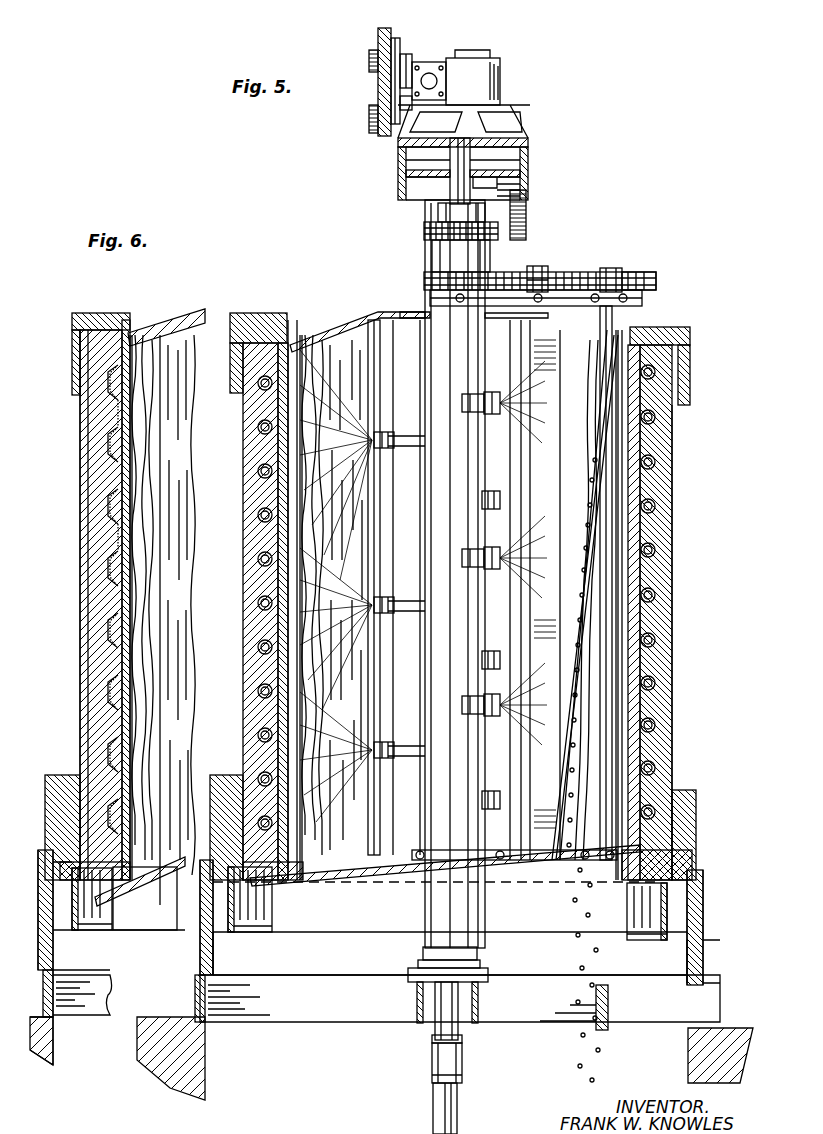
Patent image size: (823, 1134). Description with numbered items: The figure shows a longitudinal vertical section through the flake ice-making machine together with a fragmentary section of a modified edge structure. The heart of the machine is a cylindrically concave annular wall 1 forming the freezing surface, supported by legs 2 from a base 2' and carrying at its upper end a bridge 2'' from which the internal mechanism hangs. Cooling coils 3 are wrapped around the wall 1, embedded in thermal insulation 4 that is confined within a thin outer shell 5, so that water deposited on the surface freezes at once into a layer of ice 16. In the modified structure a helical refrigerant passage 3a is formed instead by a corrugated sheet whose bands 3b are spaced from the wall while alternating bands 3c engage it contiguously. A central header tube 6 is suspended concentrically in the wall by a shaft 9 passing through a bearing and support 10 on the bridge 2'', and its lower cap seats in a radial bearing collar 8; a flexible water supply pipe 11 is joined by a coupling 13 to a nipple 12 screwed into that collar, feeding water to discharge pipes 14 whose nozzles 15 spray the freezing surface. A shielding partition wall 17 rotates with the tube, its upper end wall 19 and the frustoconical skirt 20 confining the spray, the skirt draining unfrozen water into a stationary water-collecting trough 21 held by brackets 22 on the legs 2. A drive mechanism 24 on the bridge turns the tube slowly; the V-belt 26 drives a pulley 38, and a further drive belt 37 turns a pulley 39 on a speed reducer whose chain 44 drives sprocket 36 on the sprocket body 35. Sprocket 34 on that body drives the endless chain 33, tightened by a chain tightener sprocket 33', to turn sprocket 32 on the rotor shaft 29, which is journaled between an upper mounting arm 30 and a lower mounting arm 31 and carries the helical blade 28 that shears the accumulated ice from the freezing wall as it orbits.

In FIG. 5, the V-belt 26 is at (392, 50).
In FIG. 5, the further drive belt 37 is at (446, 60).
In FIG. 5, the pulley 38 is at (375, 46).
In FIG. 5, the pulley 39 is at (378, 124).
In FIG. 5, the drive mechanism 24 is at (500, 78).
In FIG. 5, the bearing and support 10 is at (415, 176).
In FIG. 5, the shaft 9 is at (450, 194).
In FIG. 5, the bridge 2'' is at (541, 212).
In FIG. 6, the sprocket body 35 is at (438, 210).
In FIG. 6, the chain 44 is at (424, 232).
In FIG. 6, the sprocket 36 is at (432, 250).
In FIG. 6, the sprocket 34 is at (424, 274).
In FIG. 6, the chain tightener sprocket 33' is at (566, 257).
In FIG. 6, the sprocket 32 is at (622, 272).
In FIG. 6, the endless chain 33 is at (656, 272).
In FIG. 6, the upper mounting arm 30 is at (642, 298).
In FIG. 6, the central header tube 6 is at (460, 533).
In FIG. 6, the nozzles 15 is at (388, 450).
In FIG. 6, the shielding partition wall 17 is at (382, 548).
In FIG. 6, the discharge pipes 14 is at (405, 436).
In FIG. 6, the thin outer shell 5 is at (243, 530).
In FIG. 6, the thermal insulation 4 is at (248, 582).
In FIG. 6, the cooling coils 3 is at (262, 425).
In FIG. 6, the cylindrically concave annular wall 1 is at (140, 476).
In FIG. 6, the layer of ice 16 is at (132, 394).
In FIG. 6, the rotor shaft 29 is at (605, 386).
In FIG. 6, the helical blade 28 is at (588, 524).
In FIG. 6, the helical refrigerant passage 3a is at (108, 560).
In FIG. 6, the bands 3b is at (106, 498).
In FIG. 6, the bands 3c is at (108, 528).
In FIG. 6, the upper end wall 19 is at (188, 322).
In FIG. 6, the legs 2 is at (377, 861).
In FIG. 6, the frustoconical skirt 20 is at (370, 866).
In FIG. 6, the lower mounting arm 31 is at (552, 856).
In FIG. 6, the water-collecting trough 21 is at (272, 924).
In FIG. 6, the brackets 22 is at (213, 950).
In FIG. 6, the base 2' is at (393, 1000).
In FIG. 6, the radial bearing collar 8 is at (423, 954).
In FIG. 6, the nipple 12 is at (458, 1036).
In FIG. 6, the coupling 13 is at (432, 1060).
In FIG. 6, the flexible water supply pipe 11 is at (433, 1106).